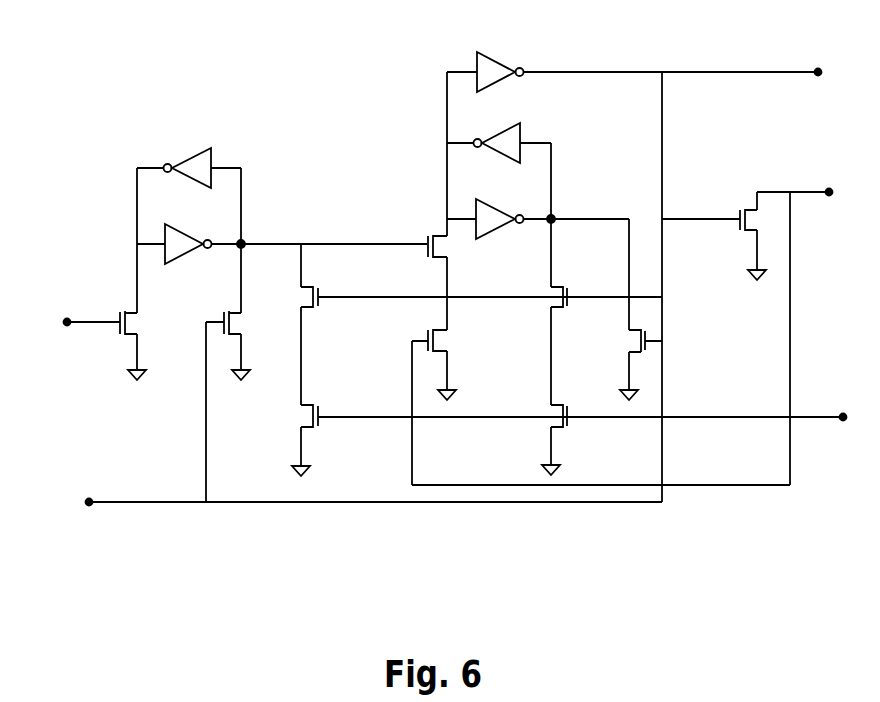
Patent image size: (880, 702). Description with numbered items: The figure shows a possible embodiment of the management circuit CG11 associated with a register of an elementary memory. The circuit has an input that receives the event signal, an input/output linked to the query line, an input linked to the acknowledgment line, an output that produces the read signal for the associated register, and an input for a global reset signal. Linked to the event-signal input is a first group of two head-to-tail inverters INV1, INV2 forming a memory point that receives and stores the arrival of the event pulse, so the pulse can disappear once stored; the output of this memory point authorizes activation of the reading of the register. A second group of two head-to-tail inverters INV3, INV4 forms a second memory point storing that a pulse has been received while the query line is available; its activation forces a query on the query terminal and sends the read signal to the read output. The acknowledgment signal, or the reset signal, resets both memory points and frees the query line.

The management circuit CG11 is at (433, 268).
The inverter INV1 is at (189, 158).
The inverter INV2 is at (282, 235).
The inverter INV3 is at (506, 142).
The inverter INV4 is at (538, 214).